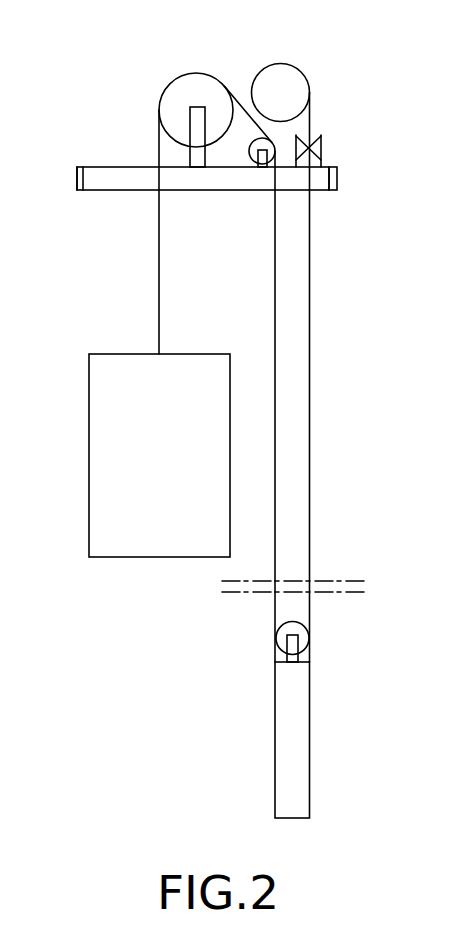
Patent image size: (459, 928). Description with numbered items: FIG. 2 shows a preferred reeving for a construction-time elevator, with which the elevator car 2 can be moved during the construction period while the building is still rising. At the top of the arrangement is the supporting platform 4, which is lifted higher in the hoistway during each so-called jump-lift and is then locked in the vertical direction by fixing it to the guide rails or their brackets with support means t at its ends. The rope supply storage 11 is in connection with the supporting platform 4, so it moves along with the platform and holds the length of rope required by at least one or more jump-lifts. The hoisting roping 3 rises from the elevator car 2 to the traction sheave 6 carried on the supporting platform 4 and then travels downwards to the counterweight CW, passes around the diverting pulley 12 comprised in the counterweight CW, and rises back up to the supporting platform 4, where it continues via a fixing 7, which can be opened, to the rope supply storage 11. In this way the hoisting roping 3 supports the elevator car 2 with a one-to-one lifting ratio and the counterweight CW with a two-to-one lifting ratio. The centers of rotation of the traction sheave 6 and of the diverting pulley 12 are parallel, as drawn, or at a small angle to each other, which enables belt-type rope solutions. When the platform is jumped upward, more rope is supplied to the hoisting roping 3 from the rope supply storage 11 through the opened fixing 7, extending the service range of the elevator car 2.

The elevator car 2 is at (95, 428).
The hoisting roping 3 is at (159, 258).
The supporting platform 4 is at (118, 173).
The traction sheave 6 is at (195, 83).
The fixing 7 is at (322, 146).
The rope supply storage 11 is at (302, 73).
The diverting pulley 12 is at (280, 637).
The counterweight CW is at (280, 733).
The support means t is at (77, 182).